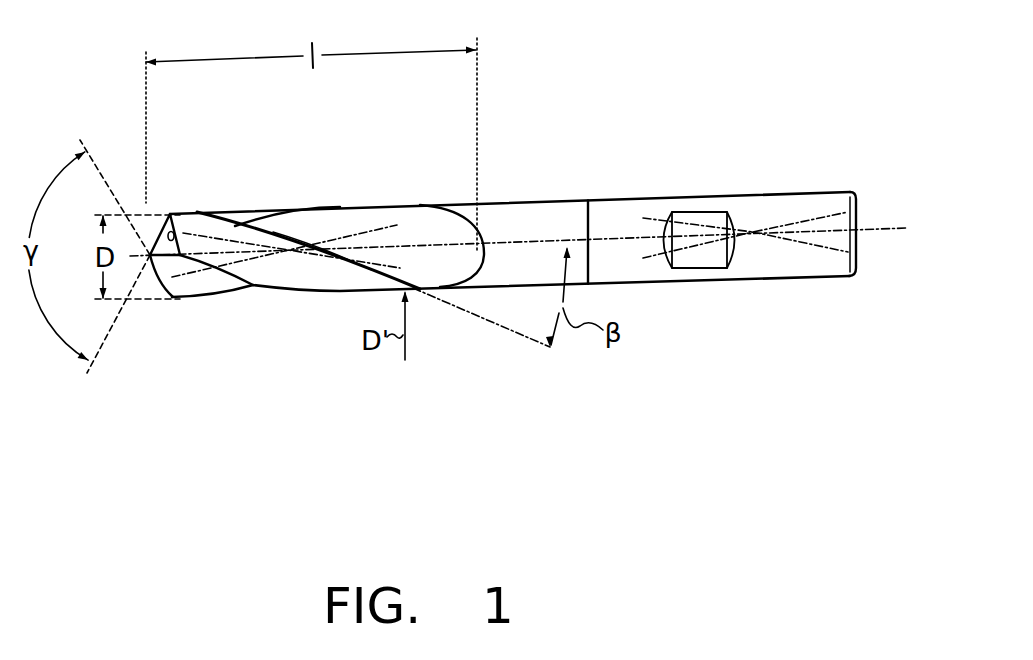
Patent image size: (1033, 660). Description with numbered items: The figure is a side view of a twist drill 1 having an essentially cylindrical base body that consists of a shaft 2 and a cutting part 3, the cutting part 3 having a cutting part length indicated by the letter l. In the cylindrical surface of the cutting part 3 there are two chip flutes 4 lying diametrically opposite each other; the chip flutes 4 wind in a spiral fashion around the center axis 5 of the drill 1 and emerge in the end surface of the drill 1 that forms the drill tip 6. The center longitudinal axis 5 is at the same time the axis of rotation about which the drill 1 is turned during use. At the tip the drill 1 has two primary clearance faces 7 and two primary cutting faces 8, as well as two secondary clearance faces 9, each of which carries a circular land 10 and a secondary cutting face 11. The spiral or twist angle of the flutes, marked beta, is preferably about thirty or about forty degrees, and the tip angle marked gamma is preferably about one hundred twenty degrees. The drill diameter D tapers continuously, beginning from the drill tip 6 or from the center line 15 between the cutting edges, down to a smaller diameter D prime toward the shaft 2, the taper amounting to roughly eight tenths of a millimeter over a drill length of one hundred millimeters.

The twist drill 1 is at (601, 105).
The shaft 2 is at (757, 193).
The cutting part 3 is at (402, 204).
The chip flutes 4 is at (403, 238).
The center axis 5 is at (884, 228).
The drill tip 6 is at (145, 233).
The primary clearance faces 7 is at (157, 216).
The primary cutting faces 8 is at (163, 298).
The secondary clearance faces 9 is at (212, 222).
The circular land 10 is at (290, 223).
The secondary cutting face 11 is at (312, 217).
The center line between the cutting edges 15 is at (150, 289).